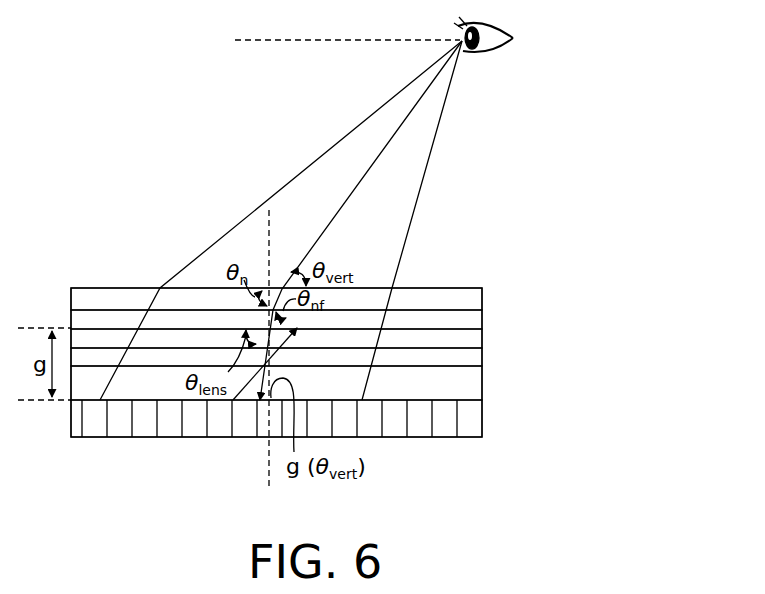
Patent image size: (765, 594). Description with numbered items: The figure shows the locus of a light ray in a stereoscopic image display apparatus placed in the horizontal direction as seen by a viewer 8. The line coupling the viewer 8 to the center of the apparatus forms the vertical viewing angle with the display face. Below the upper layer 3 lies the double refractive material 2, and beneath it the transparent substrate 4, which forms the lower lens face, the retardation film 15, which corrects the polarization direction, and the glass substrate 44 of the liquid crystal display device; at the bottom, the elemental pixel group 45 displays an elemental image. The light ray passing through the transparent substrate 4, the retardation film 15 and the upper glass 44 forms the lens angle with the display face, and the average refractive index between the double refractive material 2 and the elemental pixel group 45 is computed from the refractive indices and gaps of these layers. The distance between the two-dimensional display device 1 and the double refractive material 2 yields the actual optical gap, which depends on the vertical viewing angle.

The viewer 8 is at (492, 49).
The two-dimensional display device 1 is at (559, 367).
The first layer 3 is at (481, 298).
The double refractive material 2 is at (481, 319).
The transparent substrate (lower lens face) 4 is at (479, 337).
The retardation film 15 is at (479, 356).
The glass substrate of the liquid crystal display device 44 is at (477, 382).
The elemental pixel group 45 is at (477, 418).